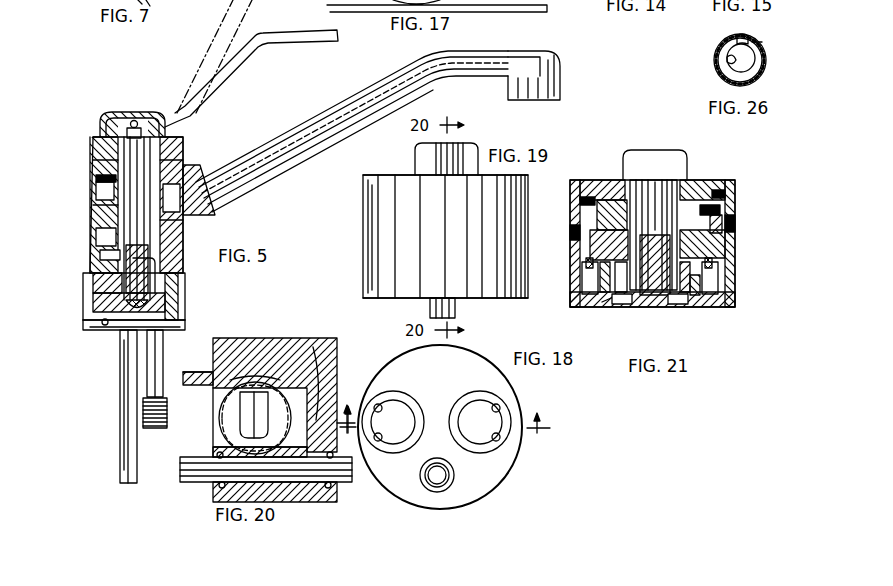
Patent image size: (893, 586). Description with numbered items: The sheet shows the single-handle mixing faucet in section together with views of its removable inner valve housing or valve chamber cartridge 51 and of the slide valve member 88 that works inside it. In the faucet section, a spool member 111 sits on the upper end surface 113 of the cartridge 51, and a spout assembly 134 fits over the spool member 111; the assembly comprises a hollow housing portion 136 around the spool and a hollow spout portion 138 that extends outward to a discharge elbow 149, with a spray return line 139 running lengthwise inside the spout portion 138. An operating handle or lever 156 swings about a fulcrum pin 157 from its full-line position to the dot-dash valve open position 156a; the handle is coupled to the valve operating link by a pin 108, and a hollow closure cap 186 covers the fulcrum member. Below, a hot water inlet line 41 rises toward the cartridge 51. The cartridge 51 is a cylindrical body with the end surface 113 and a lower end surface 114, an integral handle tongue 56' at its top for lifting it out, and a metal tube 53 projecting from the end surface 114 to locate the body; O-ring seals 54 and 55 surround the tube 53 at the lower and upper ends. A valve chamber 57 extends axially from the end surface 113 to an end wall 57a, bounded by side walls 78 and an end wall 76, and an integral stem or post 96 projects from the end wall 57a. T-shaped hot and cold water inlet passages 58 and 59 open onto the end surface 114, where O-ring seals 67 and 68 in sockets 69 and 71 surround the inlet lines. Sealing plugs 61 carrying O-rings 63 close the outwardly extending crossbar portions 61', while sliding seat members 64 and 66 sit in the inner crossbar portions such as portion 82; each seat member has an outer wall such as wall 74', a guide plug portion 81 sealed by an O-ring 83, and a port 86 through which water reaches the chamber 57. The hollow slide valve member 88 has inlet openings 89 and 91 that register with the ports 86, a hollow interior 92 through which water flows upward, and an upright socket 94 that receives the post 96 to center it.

In FIG. 5, the hot water inlet line 41 is at (120, 383).
In FIG. 5, the inner valve housing or valve chamber cartridge 51 is at (90, 278).
In FIG. 19, the inner valve housing or valve chamber cartridge 51 is at (398, 288).
In FIG. 20, the inner valve housing or valve chamber cartridge 51 is at (287, 357).
In FIG. 18, the inner valve housing or valve chamber cartridge 51 is at (480, 478).
In FIG. 21, the inner valve housing or valve chamber cartridge 51 is at (737, 284).
In FIG. 19, the metal tube 53 is at (456, 307).
In FIG. 20, the metal tube 53 is at (188, 462).
In FIG. 20, the O-ring seal 54 is at (334, 493).
In FIG. 18, the O-ring seal 54 is at (437, 488).
In FIG. 20, the O-ring seal 55 is at (213, 487).
In FIG. 19, the integral handle tongue 56' is at (429, 155).
In FIG. 20, the integral handle tongue 56' is at (196, 352).
In FIG. 21, the integral handle tongue 56' is at (664, 153).
In FIG. 20, the valve chamber 57 is at (212, 400).
In FIG. 21, the valve chamber 57 is at (653, 192).
In FIG. 20, the end wall of valve chamber 57a is at (313, 347).
In FIG. 21, the end wall of valve chamber 57a is at (618, 296).
In FIG. 18, the hot water inlet passage or cavity 58 is at (380, 406).
In FIG. 21, the hot water inlet passage or cavity 58 is at (700, 308).
In FIG. 18, the cold water inlet passage or cavity 59 is at (498, 409).
In FIG. 21, the cold water inlet passage or cavity 59 is at (605, 298).
In FIG. 21, the sealing plug 61 is at (655, 224).
In FIG. 21, the outwardly extending portion of crossbar section 61' is at (686, 178).
In FIG. 21, the sealing O-ring 63 is at (730, 202).
In FIG. 21, the sliding seat member 64 is at (710, 180).
In FIG. 20, the sliding seat member 66 is at (223, 427).
In FIG. 21, the sliding seat member 66 is at (597, 207).
In FIG. 18, the O-ring seal 67 is at (392, 397).
In FIG. 21, the O-ring seal 67 is at (737, 305).
In FIG. 18, the O-ring seal 68 is at (483, 397).
In FIG. 21, the O-ring seal 68 is at (580, 310).
In FIG. 18, the socket 69 is at (378, 445).
In FIG. 18, the socket 71 is at (497, 450).
In FIG. 21, the seal 74' is at (700, 299).
In FIG. 21, the end wall of cavity 76 is at (733, 265).
In FIG. 20, the side walls of cavity 78 is at (247, 362).
In FIG. 21, the guide plug portion 81 is at (727, 209).
In FIG. 21, the inner crossbar portion 82 is at (738, 250).
In FIG. 21, the O-ring seal 83 is at (655, 310).
In FIG. 21, the port 86 is at (670, 227).
In FIG. 26, the slide valve member 88 is at (798, 75).
In FIG. 26, the inlet opening 89 is at (720, 88).
In FIG. 26, the inlet opening 91 is at (762, 43).
In FIG. 26, the hollow interior 92 is at (748, 38).
In FIG. 26, the upright socket 94 is at (724, 60).
In FIG. 20, the post or integral stem 96 is at (280, 393).
In FIG. 21, the post or integral stem 96 is at (623, 300).
In FIG. 5, the pin 108 is at (138, 112).
In FIG. 5, the spool member 111 is at (90, 193).
In FIG. 19, the upper end surface 113 is at (383, 178).
In FIG. 20, the upper end surface 113 is at (213, 337).
In FIG. 19, the lower end surface 114 is at (365, 297).
In FIG. 5, the spout assembly 134 is at (185, 180).
In FIG. 5, the hollow housing portion 136 is at (93, 166).
In FIG. 5, the hollow spout portion 138 is at (252, 146).
In FIG. 5, the spray return line 139 is at (240, 184).
In FIG. 5, the discharge elbow 149 is at (560, 73).
In FIG. 5, the operating handle or lever 156 is at (234, 76).
In FIG. 5, the valve open position of handle 156a is at (243, 6).
In FIG. 5, the fulcrum pin 157 is at (165, 125).
In FIG. 5, the hollow closure cap 186 is at (100, 118).